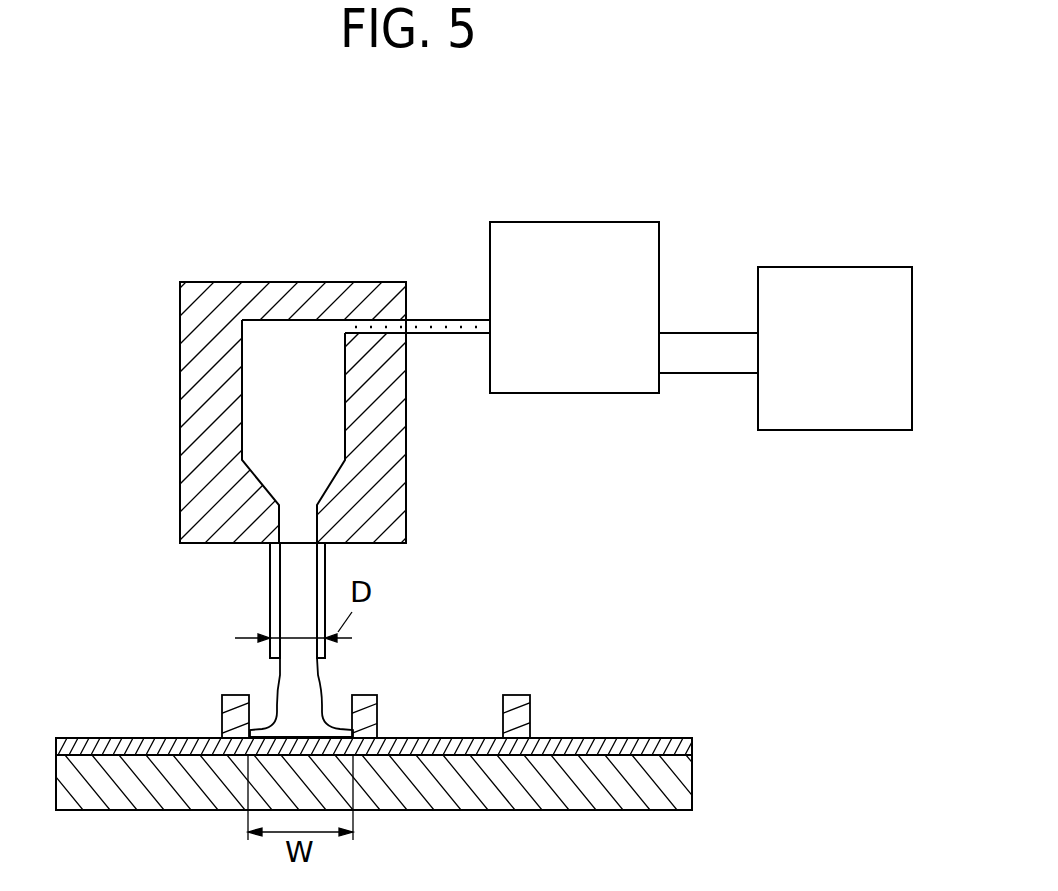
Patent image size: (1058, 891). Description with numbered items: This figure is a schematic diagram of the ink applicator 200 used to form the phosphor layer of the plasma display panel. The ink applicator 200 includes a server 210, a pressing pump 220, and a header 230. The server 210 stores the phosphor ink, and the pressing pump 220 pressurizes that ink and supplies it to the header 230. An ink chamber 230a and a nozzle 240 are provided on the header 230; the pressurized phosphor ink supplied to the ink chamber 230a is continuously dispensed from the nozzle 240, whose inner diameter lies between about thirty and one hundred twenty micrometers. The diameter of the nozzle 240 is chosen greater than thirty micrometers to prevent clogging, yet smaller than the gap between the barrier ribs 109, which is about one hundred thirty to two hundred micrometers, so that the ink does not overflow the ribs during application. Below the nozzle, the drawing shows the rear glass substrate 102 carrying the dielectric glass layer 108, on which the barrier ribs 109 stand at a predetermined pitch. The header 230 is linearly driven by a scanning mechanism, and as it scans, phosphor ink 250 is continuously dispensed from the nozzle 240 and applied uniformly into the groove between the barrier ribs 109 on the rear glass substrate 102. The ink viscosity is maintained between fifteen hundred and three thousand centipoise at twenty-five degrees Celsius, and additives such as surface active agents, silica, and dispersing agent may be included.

The ink applicator 200 is at (407, 255).
The header 230 is at (407, 512).
The ink chamber 230a is at (257, 402).
The pressing pump 220 is at (585, 393).
The server 210 is at (837, 430).
The nozzle 240 is at (270, 610).
The phosphor ink 250 is at (323, 693).
The barrier ribs 109 is at (222, 698).
The dielectric glass layer 108 is at (692, 745).
The rear glass substrate 102 is at (692, 773).